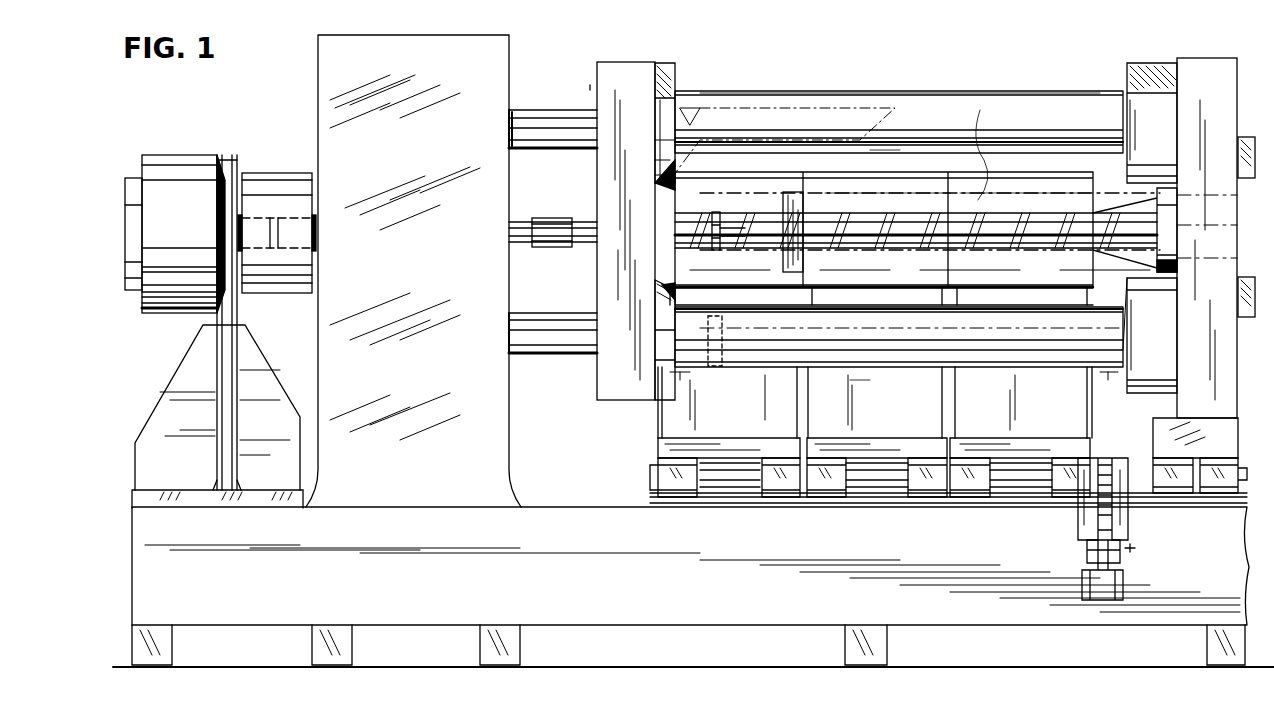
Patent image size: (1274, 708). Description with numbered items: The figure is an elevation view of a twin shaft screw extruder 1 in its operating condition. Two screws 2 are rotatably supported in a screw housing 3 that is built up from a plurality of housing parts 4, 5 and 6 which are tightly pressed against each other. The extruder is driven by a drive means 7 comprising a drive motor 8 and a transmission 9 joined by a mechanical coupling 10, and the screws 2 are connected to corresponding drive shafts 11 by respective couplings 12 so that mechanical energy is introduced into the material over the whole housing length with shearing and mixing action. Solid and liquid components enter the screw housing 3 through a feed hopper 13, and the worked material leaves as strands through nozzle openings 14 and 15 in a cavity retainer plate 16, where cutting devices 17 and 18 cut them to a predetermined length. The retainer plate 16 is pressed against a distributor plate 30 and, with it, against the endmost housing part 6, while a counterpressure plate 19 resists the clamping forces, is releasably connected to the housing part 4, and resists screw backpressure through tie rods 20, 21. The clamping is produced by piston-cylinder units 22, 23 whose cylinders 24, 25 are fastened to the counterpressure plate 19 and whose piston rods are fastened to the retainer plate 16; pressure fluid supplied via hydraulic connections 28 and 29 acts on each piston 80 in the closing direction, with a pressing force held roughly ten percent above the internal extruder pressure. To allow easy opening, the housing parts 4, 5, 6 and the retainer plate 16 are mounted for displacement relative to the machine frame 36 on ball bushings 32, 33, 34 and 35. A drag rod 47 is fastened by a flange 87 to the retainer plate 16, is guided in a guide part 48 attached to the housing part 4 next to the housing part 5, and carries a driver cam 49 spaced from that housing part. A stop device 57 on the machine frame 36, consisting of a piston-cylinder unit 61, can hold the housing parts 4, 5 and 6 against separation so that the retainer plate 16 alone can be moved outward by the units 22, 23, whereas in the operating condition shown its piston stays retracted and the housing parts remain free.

The twin shaft screw extruder 1 is at (590, 88).
The screws 2 is at (979, 200).
The screw housing 3 is at (872, 160).
The housing part 4 is at (740, 206).
The housing part 5 is at (868, 206).
The housing part 6 is at (1010, 206).
The drive means 7 is at (297, 125).
The drive motor 8 is at (160, 174).
The transmission 9 is at (324, 58).
The mechanical coupling 10 is at (264, 184).
The drive shafts 11 is at (520, 223).
The couplings 12 is at (541, 246).
The feed hopper 13 is at (682, 103).
The nozzle opening 14 is at (1215, 197).
The nozzle opening 15 is at (1219, 262).
The cavity retainer plate 16 is at (1205, 70).
The cutting device 17 is at (1249, 138).
The cutting device 18 is at (1246, 316).
The counterpressure plate 19 is at (622, 79).
The tie rod 20 is at (527, 122).
The tie rod 21 is at (543, 340).
The piston-cylinder unit 22 is at (822, 88).
The piston-cylinder unit 23 is at (866, 362).
The cylinder 24 is at (778, 100).
The cylinder 25 is at (771, 358).
The hydraulic connection 28 is at (1108, 88).
The hydraulic connection 29 is at (673, 85).
The distributor plate 30 is at (1108, 264).
The ball bushing 32 is at (686, 480).
The ball bushing 33 is at (835, 480).
The ball bushing 34 is at (978, 480).
The ball bushing 35 is at (1172, 478).
The machine frame 36 is at (593, 533).
The drag rod 47 is at (911, 232).
The guide part 48 is at (803, 250).
The driver cam 49 is at (714, 230).
The stop device 57 is at (1142, 518).
The piston-cylinder unit 61 is at (1096, 548).
The piston 80 is at (715, 348).
The flange 87 is at (1140, 224).